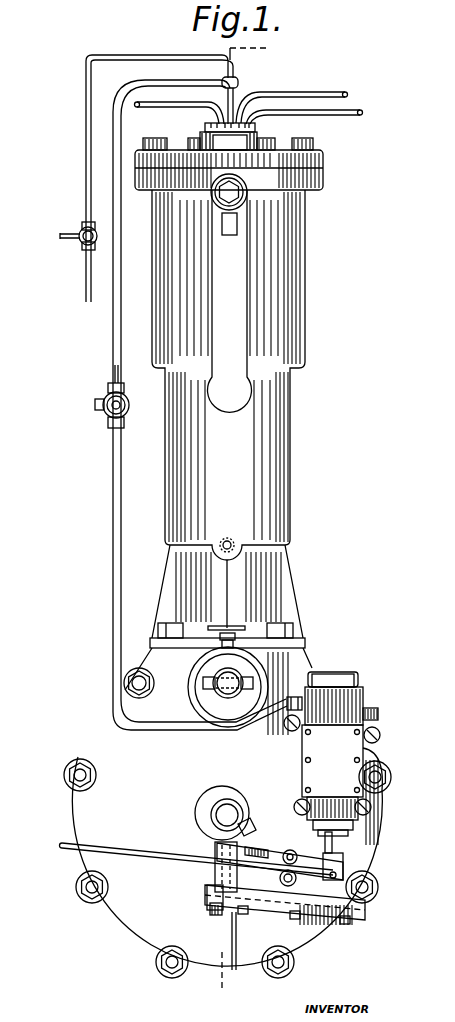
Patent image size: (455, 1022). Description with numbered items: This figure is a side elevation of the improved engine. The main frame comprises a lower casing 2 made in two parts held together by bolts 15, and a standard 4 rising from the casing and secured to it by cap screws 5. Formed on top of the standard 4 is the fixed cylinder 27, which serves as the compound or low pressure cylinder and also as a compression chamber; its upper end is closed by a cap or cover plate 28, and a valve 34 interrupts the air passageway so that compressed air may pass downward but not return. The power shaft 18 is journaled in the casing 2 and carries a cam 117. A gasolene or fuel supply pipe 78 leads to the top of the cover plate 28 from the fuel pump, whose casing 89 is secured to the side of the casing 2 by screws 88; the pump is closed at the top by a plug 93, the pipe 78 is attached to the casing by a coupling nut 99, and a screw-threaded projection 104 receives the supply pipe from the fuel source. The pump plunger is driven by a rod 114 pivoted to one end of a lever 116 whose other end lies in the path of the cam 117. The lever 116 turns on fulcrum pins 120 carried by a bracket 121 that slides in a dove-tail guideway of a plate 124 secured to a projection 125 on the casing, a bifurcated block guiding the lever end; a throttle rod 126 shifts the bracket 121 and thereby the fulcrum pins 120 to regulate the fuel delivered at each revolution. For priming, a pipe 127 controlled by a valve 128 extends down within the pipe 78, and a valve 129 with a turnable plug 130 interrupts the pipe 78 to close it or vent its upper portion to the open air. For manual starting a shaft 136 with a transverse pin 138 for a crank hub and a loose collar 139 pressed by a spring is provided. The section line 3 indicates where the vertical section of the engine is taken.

The lower casing 2 is at (133, 920).
The section line 3— 3 is at (247, 527).
The standard 4 is at (236, 547).
The cap screws 5 is at (168, 617).
The bolts 15 is at (75, 762).
The power shaft 18 is at (222, 818).
The fixed cylinder 27 is at (305, 277).
The cap or cover plate 28 is at (325, 160).
The valve 34 is at (216, 201).
The fuel supply pipe 78 is at (115, 331).
The screws 88 is at (285, 729).
The casing 89 is at (318, 752).
The plug 93 is at (340, 676).
The coupling nut 99 is at (290, 695).
The projection 104 is at (370, 708).
The rod 114 is at (335, 846).
The lever 116 is at (345, 868).
The cam 117 is at (205, 800).
The fulcrum pins 120 is at (303, 850).
The bracket 121 is at (281, 849).
The plate 124 is at (275, 906).
The projection 125 is at (207, 890).
The throttle rod 126 is at (130, 852).
The pipe 127 is at (85, 150).
The valve 128 is at (81, 245).
The valve 129 is at (104, 396).
The plug 130 is at (109, 413).
The shaft 136 is at (218, 678).
The transverse pin 138 is at (208, 687).
The loose collar 139 is at (218, 710).